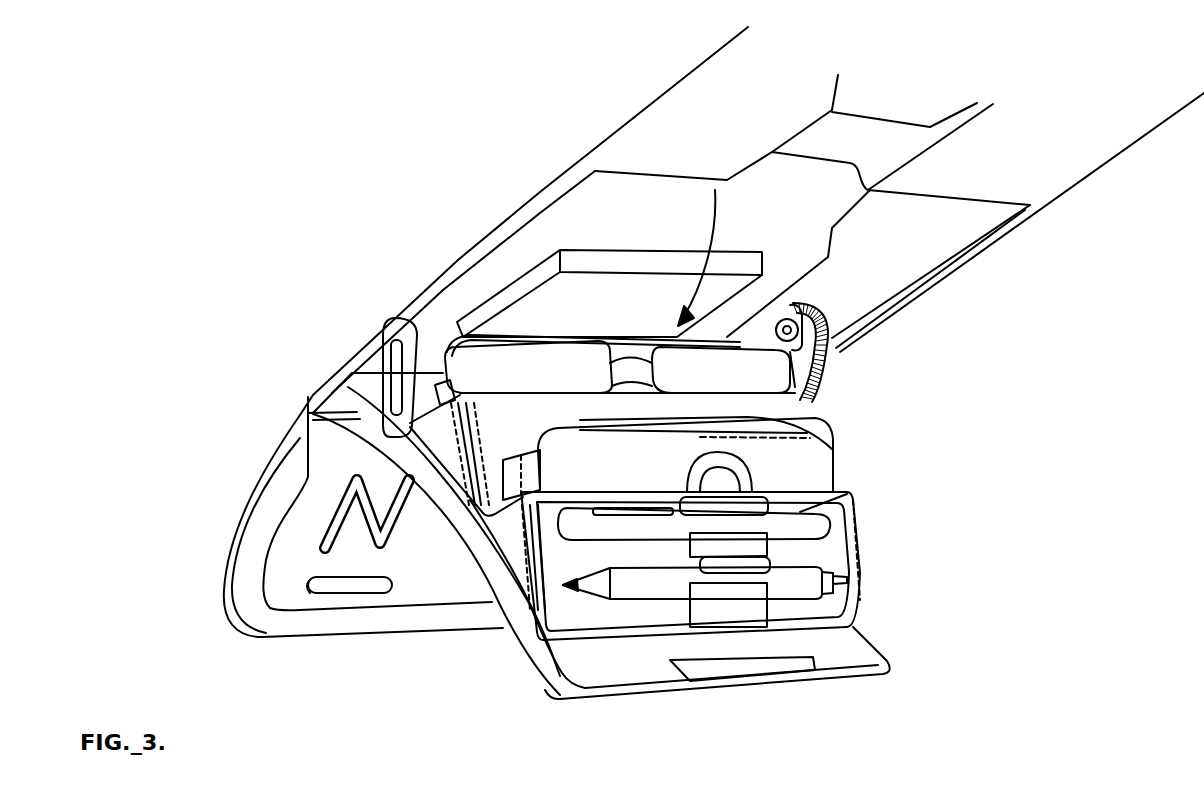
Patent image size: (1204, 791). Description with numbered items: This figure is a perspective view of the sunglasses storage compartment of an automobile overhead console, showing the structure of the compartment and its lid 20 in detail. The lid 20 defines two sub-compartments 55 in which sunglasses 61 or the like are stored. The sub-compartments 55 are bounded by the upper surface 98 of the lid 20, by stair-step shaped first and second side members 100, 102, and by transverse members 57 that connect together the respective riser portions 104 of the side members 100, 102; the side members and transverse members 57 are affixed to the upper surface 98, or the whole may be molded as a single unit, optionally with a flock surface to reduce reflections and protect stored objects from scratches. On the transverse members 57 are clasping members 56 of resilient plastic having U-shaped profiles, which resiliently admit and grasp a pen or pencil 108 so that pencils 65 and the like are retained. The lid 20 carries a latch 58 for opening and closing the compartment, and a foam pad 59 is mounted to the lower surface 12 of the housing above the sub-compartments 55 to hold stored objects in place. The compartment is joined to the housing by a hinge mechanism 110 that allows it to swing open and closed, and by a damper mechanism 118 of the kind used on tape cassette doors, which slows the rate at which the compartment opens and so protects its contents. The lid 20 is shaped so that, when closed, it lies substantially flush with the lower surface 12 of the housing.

The lower surface 12 is at (258, 563).
The lid 20 is at (518, 662).
The sub-compartments 55 is at (623, 357).
The clasping members 56 is at (743, 555).
The transverse members 57 is at (509, 456).
The latch 58 is at (717, 680).
The foam pad 59 is at (604, 248).
The sunglasses 61 is at (710, 357).
The pencils 65 is at (680, 583).
The upper surface 98 is at (593, 667).
The first side member 100 is at (505, 547).
The second side member 102 is at (852, 507).
The riser portions 104 is at (468, 430).
The pen or pencil 108 is at (472, 387).
The hinge mechanism 110 is at (382, 442).
The damper mechanism 118 is at (828, 355).